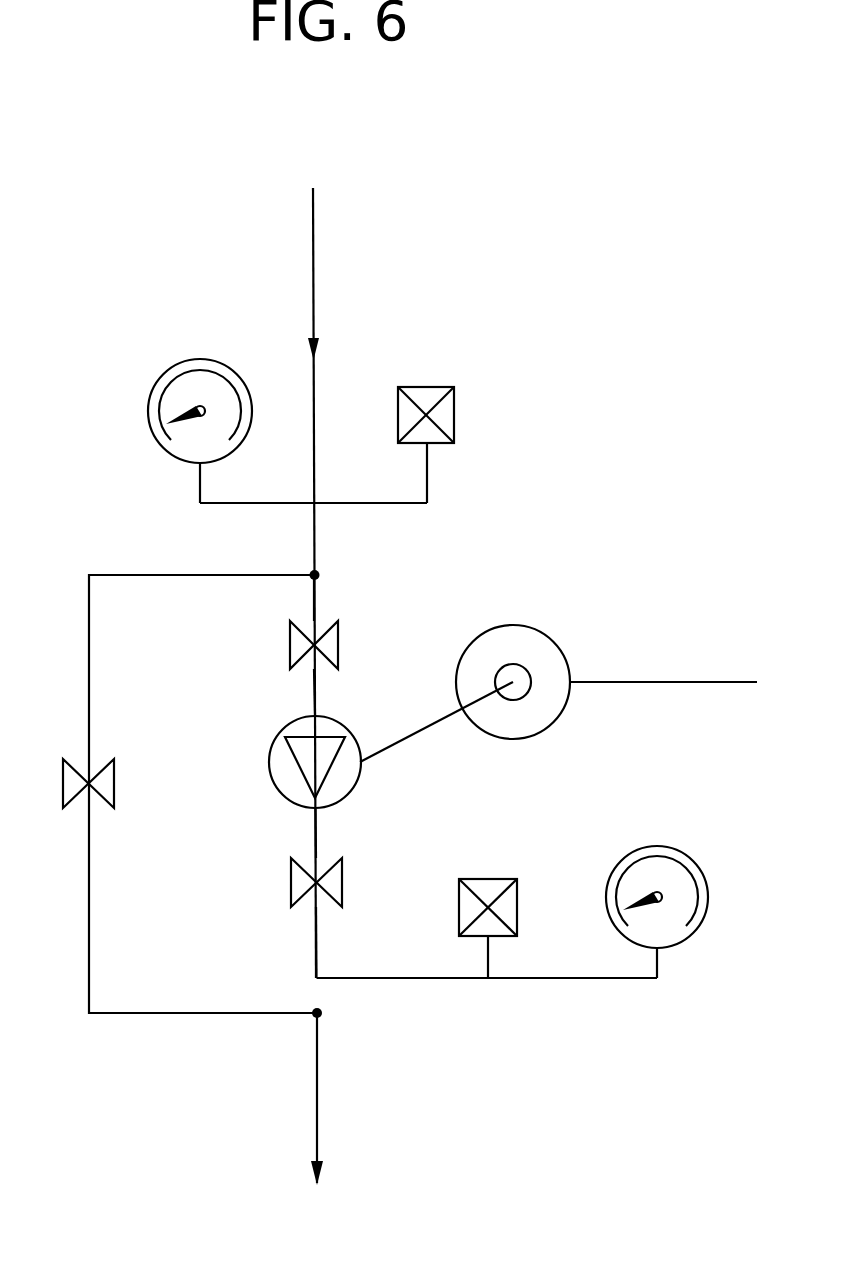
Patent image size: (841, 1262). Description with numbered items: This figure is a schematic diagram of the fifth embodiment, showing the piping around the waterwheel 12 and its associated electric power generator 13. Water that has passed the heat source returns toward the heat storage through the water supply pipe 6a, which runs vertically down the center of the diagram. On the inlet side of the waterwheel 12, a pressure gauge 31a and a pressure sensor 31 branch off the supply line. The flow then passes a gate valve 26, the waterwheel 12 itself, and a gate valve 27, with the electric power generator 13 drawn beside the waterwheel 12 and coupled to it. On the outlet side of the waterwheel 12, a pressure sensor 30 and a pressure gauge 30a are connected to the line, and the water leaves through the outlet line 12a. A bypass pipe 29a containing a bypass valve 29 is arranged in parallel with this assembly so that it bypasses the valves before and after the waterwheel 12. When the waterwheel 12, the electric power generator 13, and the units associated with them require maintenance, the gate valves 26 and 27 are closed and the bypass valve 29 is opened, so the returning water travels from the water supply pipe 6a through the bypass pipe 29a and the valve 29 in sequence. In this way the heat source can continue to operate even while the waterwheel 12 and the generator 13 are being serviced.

The water supply pipe 6a is at (313, 262).
The pressure gauge 31a is at (158, 384).
The pressure sensor 31 is at (454, 407).
The bypass pipe 29a is at (89, 625).
The gate valve 26 is at (333, 630).
The waterwheel 12 is at (347, 728).
The electric power generator 13 is at (548, 636).
The gate valve 27 is at (330, 862).
The bypass valve 29 is at (105, 760).
The pressure sensor 30 is at (490, 879).
The pressure gauge 30a is at (655, 846).
The outlet pipe 12a is at (317, 1105).